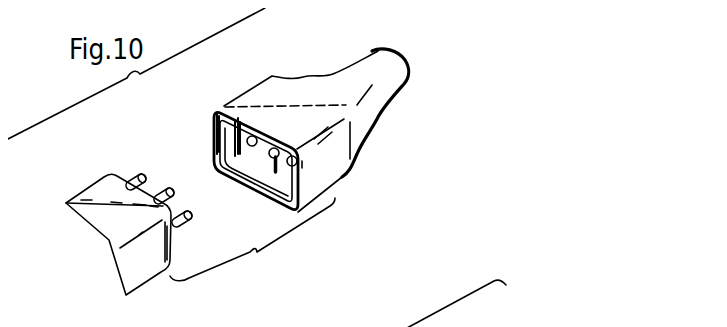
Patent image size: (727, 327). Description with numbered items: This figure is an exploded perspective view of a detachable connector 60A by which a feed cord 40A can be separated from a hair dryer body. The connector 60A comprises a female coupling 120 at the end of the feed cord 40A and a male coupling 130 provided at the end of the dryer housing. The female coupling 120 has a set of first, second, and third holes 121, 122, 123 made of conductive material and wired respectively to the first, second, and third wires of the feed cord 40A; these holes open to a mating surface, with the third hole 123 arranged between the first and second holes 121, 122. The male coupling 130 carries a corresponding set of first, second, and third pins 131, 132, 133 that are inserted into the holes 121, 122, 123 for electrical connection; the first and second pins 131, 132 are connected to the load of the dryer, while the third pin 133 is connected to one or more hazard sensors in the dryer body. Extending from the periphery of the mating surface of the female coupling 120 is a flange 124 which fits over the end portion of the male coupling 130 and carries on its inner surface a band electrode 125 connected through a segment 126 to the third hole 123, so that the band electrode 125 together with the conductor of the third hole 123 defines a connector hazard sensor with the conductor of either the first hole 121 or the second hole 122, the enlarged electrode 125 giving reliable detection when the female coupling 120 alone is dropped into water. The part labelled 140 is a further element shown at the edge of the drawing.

The feed cord 40A is at (367, 59).
The connector 60A is at (252, 241).
The female coupling 120 is at (266, 90).
The first hole 121 is at (241, 120).
The second hole 122 is at (294, 160).
The third hole 123 is at (291, 146).
The flange 124 is at (207, 104).
The band electrode 125 is at (234, 162).
The segment 126 is at (263, 154).
The male coupling 130 is at (82, 191).
The first pin 131 is at (129, 169).
The second pin 132 is at (176, 222).
The third pin 133 is at (157, 183).
The mating connector 140 is at (456, 303).